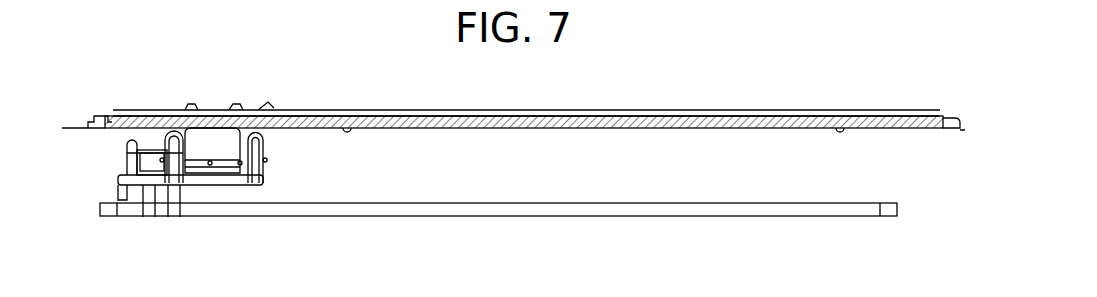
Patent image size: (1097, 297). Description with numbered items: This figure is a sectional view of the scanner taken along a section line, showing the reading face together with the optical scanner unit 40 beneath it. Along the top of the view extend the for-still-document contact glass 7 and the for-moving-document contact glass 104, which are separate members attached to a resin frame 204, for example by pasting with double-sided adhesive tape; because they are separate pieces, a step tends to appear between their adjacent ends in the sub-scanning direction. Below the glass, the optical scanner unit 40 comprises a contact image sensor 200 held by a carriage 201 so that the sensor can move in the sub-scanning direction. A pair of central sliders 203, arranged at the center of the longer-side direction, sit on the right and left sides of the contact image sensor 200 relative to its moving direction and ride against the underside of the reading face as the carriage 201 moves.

The for-still-document contact glass 7 is at (367, 123).
The for-moving-document contact glass 104 is at (143, 113).
The resin frame 204 is at (93, 120).
The optical scanner unit 40 is at (498, 197).
The contact image sensor 200 is at (217, 150).
The central sliders 203 is at (183, 150).
The carriage 201 is at (258, 170).